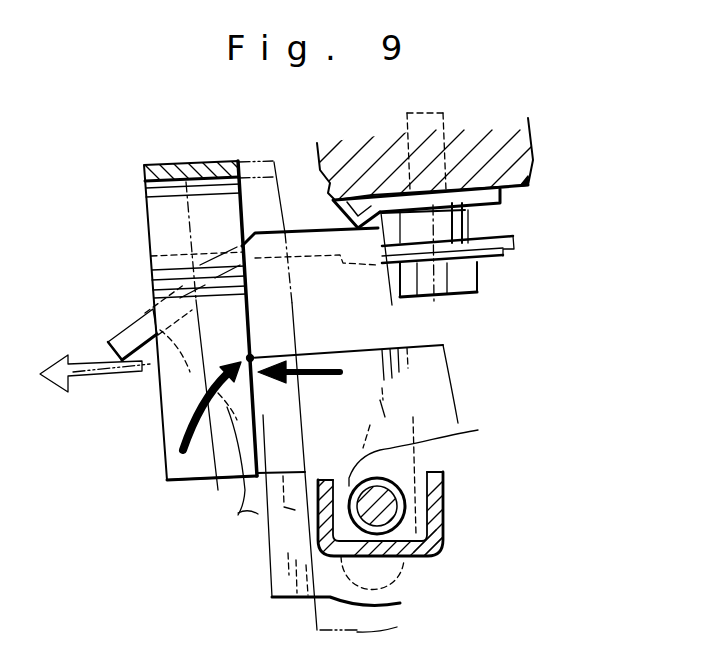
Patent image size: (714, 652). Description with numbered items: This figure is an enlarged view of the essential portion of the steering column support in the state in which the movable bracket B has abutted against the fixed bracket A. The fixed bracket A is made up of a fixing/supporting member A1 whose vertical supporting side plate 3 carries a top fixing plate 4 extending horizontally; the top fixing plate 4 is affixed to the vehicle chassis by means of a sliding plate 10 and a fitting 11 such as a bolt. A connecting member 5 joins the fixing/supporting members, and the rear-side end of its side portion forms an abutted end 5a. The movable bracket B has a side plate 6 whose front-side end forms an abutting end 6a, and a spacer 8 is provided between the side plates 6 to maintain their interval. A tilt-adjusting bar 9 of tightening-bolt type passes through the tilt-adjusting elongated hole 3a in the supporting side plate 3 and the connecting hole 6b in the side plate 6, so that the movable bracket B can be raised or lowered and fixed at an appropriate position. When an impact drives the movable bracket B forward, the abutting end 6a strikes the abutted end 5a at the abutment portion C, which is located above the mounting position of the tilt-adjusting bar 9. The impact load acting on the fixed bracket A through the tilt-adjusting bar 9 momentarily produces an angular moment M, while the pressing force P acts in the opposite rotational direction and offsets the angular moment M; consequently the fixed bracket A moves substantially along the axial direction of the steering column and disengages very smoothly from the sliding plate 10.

The supporting side plate 3 is at (366, 308).
The tilt-adjusting elongated hole 3a is at (368, 428).
The top fixing plate 4 is at (312, 230).
The connecting member 5 is at (141, 229).
The abutted end 5a is at (247, 430).
The side plate 6 is at (362, 345).
The abutting end 6a is at (218, 490).
The connecting hole 6b is at (427, 504).
The spacer 8 is at (445, 510).
The tilt-adjusting bar 9 is at (387, 485).
The sliding plate 10 is at (500, 197).
The fitting 11 is at (478, 282).
The fixed bracket A is at (125, 327).
The fixing/supporting member A1 is at (547, 322).
The movable bracket B is at (428, 376).
The abutment portion C is at (251, 356).
The angular moment M is at (204, 406).
The pressing force P is at (311, 371).